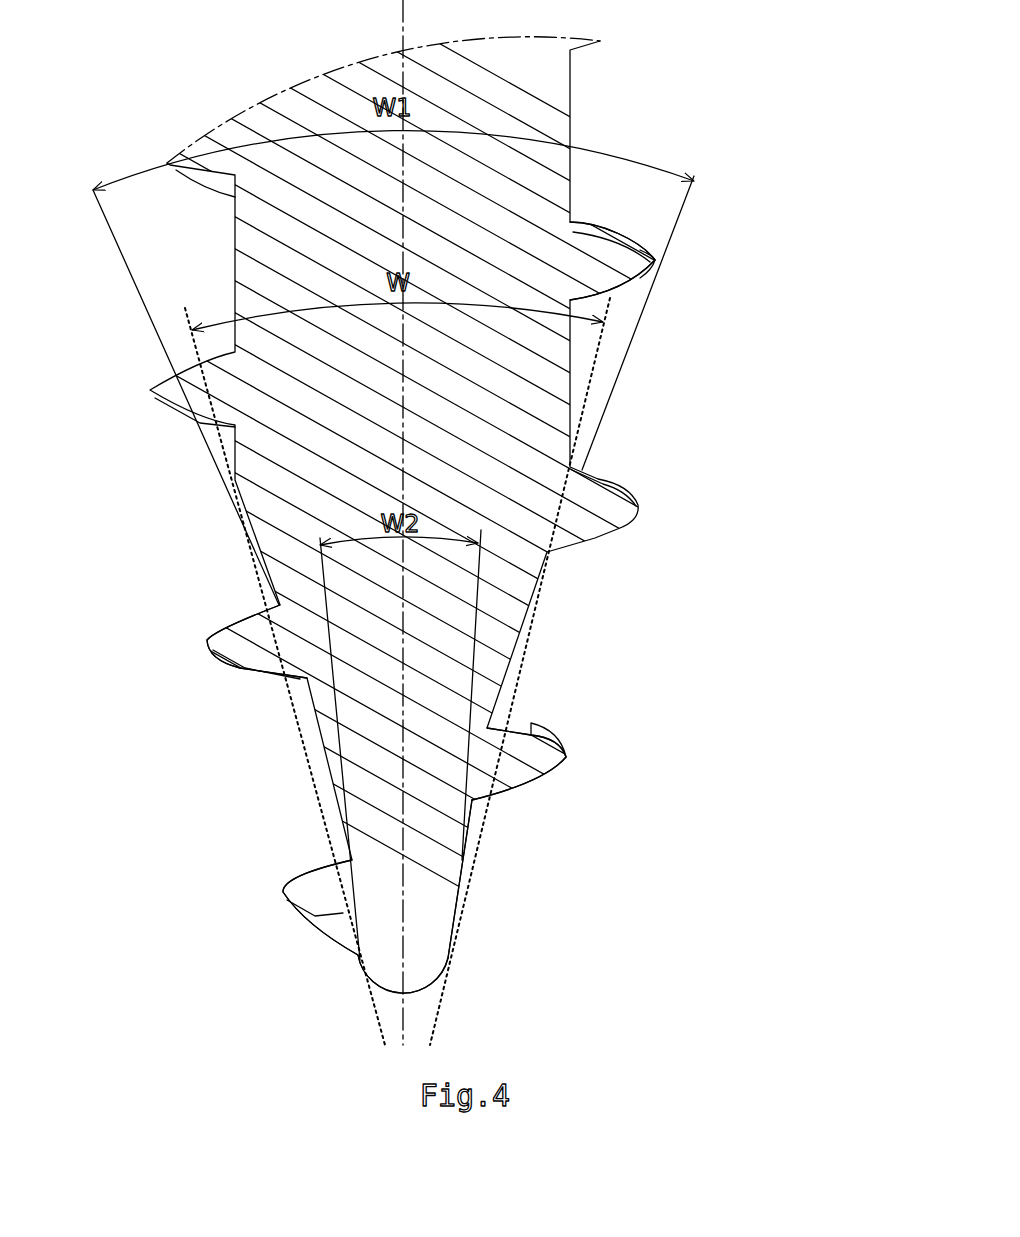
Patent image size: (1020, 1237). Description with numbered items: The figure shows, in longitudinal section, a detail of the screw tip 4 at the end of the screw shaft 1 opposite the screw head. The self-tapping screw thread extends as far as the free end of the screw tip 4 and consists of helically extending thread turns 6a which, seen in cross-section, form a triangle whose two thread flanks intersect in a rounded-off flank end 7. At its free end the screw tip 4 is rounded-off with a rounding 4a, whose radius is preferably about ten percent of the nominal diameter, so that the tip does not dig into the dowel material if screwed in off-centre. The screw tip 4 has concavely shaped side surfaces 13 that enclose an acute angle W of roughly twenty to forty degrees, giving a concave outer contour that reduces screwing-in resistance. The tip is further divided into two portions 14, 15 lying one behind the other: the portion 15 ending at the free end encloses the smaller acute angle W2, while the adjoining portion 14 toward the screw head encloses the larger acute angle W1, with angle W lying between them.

The screw shaft 1 is at (535, 118).
The thread turns 6a is at (573, 221).
The flank end 7 is at (660, 262).
The side surfaces 13 is at (247, 552).
The portion 14 is at (258, 591).
The screw tip 4 is at (417, 728).
The portion 15 is at (350, 843).
The rounding 4a is at (423, 992).